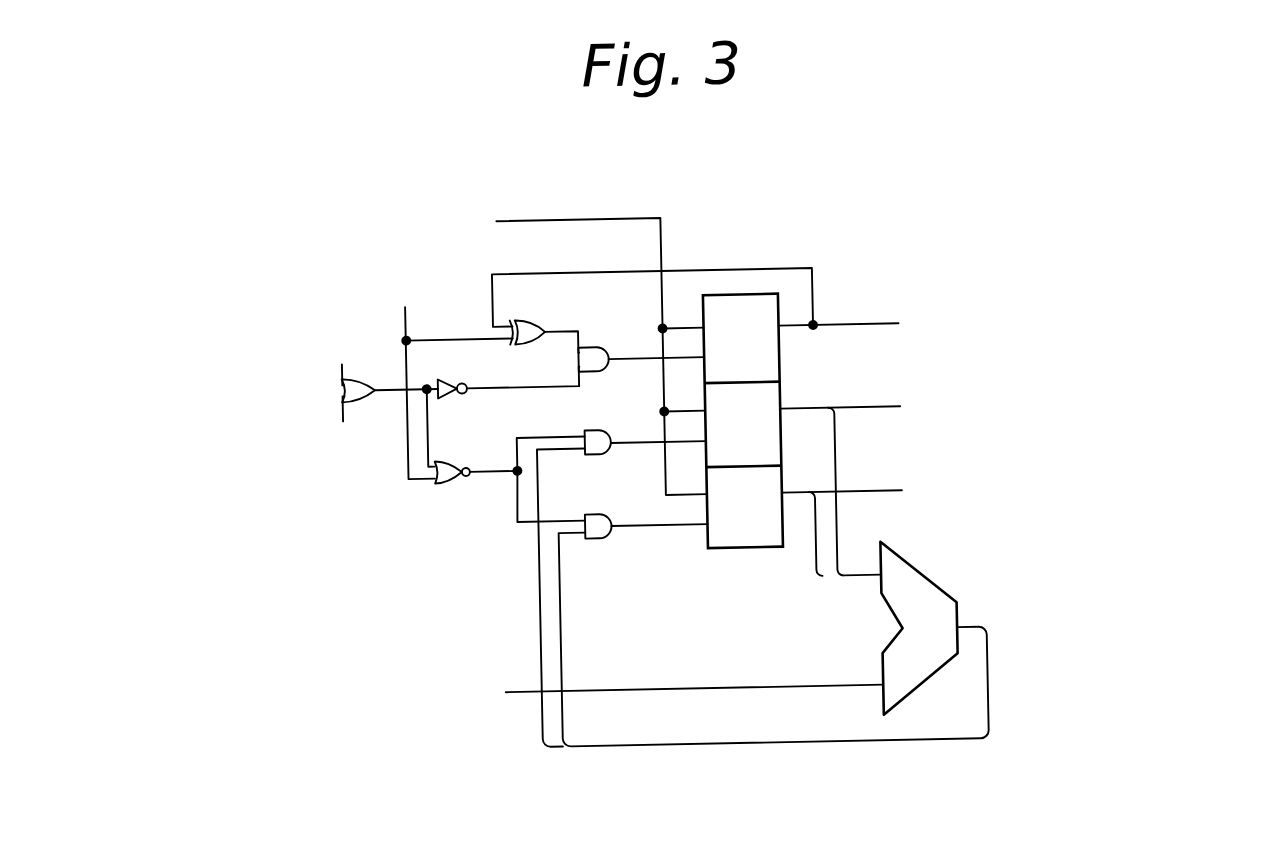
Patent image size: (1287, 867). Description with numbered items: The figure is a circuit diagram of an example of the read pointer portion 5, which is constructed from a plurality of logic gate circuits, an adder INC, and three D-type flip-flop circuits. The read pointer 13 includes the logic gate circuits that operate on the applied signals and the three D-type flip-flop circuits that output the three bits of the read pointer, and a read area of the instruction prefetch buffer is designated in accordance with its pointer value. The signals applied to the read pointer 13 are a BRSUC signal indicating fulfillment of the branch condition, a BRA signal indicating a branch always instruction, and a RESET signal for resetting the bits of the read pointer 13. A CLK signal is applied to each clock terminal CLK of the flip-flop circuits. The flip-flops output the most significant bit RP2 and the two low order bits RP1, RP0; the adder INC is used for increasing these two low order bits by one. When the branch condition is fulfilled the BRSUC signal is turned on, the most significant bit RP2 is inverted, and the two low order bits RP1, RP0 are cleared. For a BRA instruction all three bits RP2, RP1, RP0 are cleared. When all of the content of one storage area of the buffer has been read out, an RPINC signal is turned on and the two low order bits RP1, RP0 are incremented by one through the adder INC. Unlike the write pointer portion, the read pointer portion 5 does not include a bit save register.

The read pointer portion 5 is at (877, 190).
The read pointer 13 is at (820, 379).
The CLK signal CLK is at (500, 218).
The BRSUC signal BRSUC is at (407, 302).
The BRA signal BRA is at (343, 358).
The RESET signal RESET is at (343, 415).
The RPINC signal RPINC is at (500, 689).
The most significant bit RP2 is at (900, 328).
The low order bit RP1 is at (900, 411).
The low order bit RP0 is at (900, 495).
The adder INC is at (919, 627).